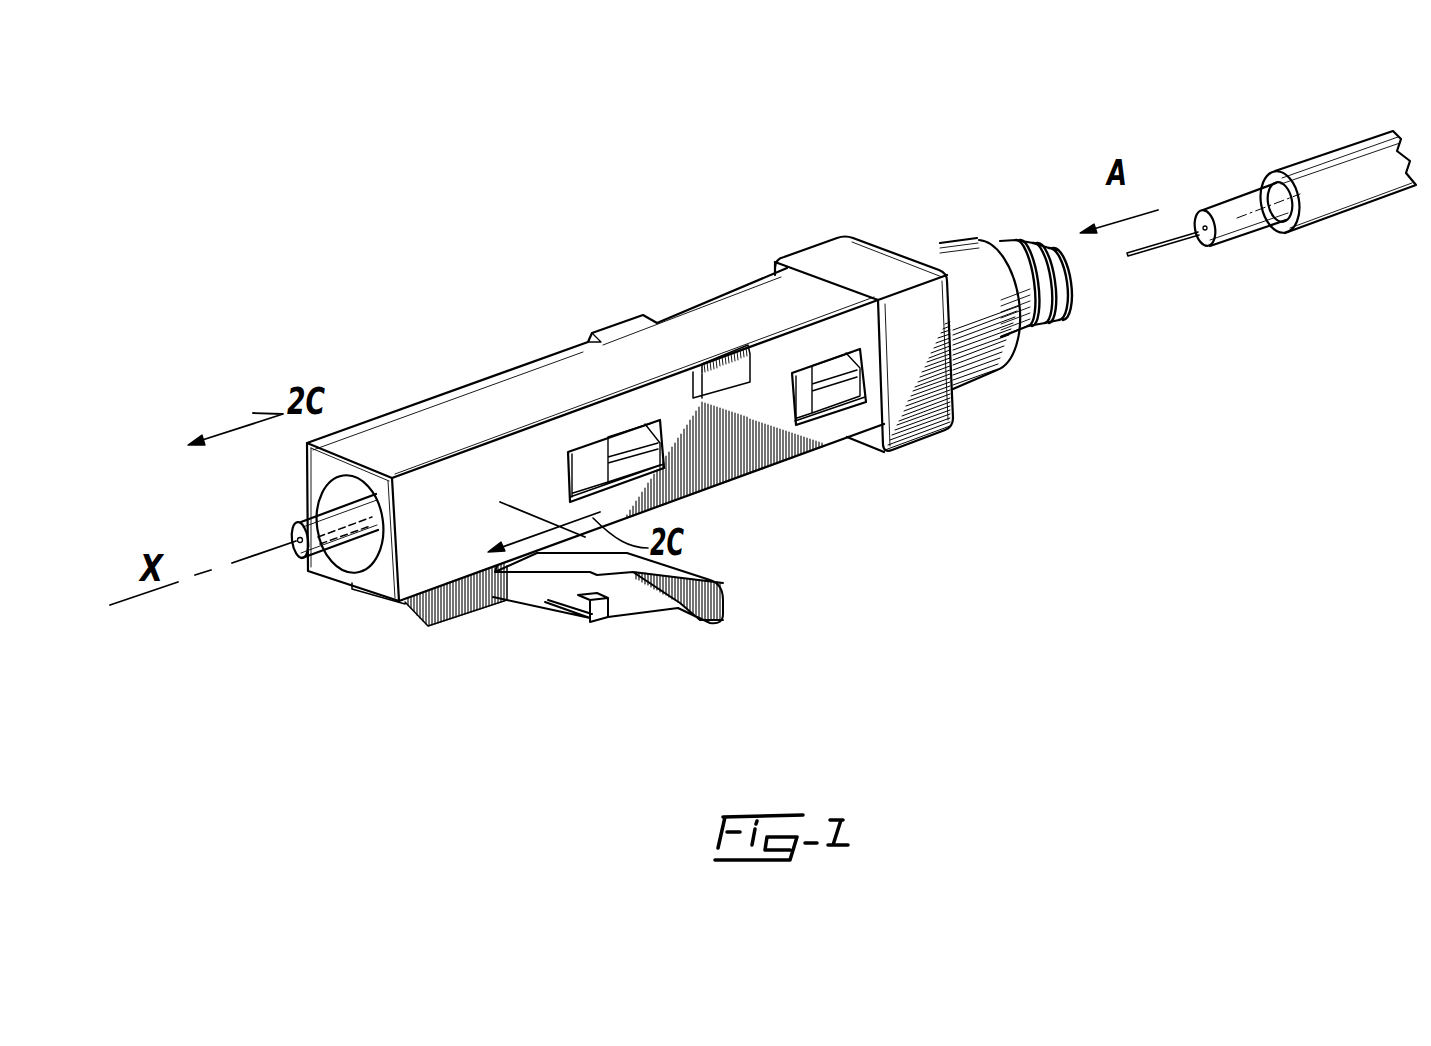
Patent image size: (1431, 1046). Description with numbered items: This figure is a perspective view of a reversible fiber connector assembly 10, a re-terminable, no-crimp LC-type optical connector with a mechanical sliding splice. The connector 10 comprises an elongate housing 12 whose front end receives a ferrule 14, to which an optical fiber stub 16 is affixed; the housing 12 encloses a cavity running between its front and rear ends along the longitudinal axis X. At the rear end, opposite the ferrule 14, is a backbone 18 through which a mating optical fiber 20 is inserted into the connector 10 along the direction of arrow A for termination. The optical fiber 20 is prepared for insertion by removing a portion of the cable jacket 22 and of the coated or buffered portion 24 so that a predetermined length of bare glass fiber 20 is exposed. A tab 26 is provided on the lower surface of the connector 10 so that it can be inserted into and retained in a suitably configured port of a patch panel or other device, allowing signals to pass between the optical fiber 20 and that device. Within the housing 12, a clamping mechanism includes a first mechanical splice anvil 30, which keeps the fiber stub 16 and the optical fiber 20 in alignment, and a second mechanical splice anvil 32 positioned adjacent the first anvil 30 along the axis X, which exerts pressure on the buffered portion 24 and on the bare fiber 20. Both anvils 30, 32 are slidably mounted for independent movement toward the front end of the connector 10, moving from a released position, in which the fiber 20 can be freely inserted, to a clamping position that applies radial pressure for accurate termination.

The reversible fiber connector assembly 10 is at (649, 381).
The housing 12 is at (447, 415).
The ferrule 14 is at (331, 560).
The optical fiber stub 16 is at (313, 500).
The backbone 18 is at (972, 363).
The optical fiber 20 is at (1170, 240).
The cable jacket 22 is at (1307, 172).
The buffered portion 24 is at (1240, 207).
The tab 26 is at (725, 600).
The first mechanical splice anvil 30 is at (592, 470).
The second mechanical splice anvil 32 is at (798, 401).